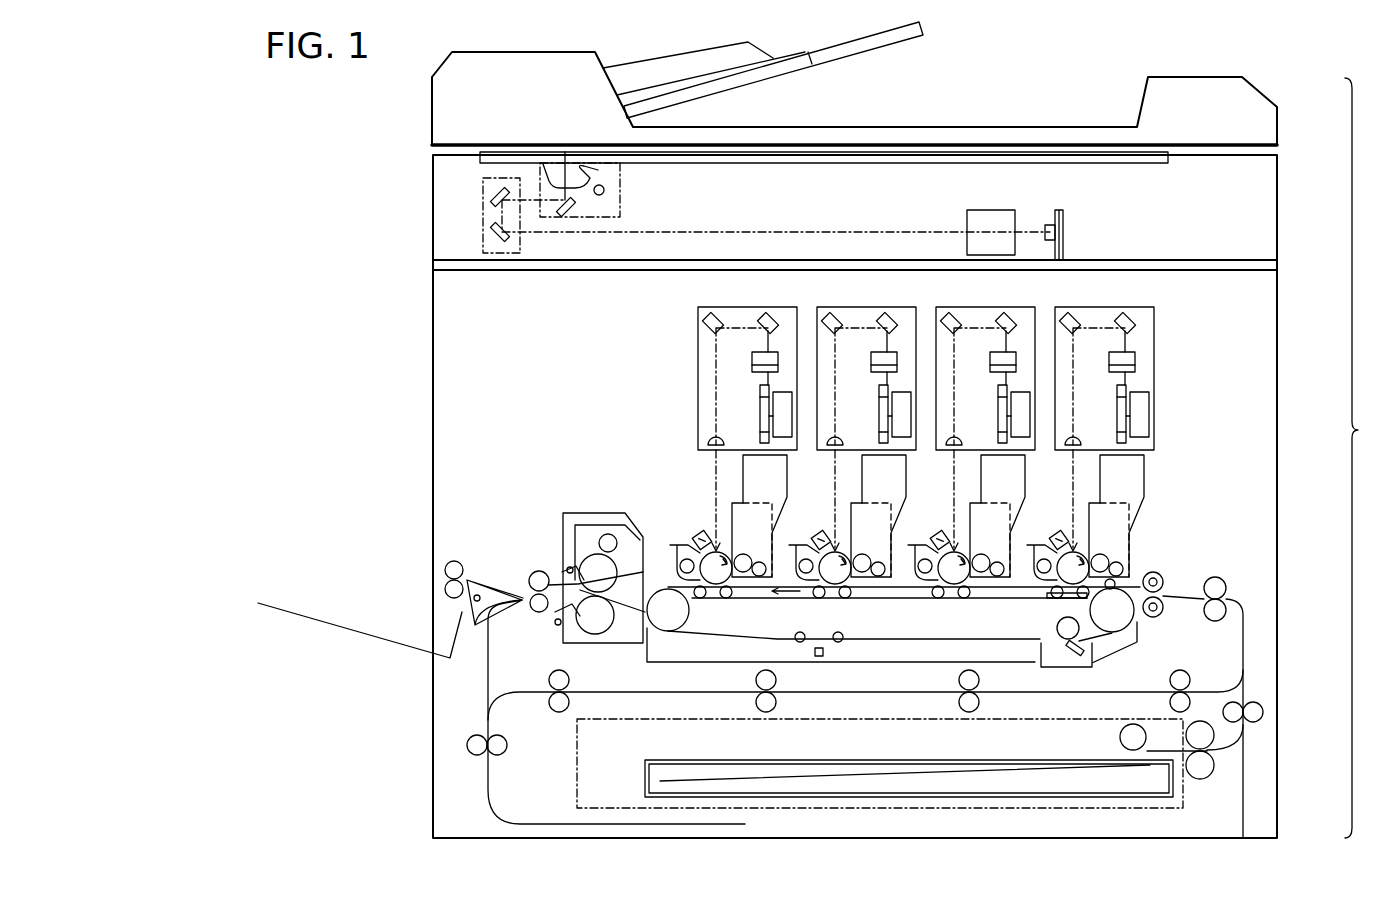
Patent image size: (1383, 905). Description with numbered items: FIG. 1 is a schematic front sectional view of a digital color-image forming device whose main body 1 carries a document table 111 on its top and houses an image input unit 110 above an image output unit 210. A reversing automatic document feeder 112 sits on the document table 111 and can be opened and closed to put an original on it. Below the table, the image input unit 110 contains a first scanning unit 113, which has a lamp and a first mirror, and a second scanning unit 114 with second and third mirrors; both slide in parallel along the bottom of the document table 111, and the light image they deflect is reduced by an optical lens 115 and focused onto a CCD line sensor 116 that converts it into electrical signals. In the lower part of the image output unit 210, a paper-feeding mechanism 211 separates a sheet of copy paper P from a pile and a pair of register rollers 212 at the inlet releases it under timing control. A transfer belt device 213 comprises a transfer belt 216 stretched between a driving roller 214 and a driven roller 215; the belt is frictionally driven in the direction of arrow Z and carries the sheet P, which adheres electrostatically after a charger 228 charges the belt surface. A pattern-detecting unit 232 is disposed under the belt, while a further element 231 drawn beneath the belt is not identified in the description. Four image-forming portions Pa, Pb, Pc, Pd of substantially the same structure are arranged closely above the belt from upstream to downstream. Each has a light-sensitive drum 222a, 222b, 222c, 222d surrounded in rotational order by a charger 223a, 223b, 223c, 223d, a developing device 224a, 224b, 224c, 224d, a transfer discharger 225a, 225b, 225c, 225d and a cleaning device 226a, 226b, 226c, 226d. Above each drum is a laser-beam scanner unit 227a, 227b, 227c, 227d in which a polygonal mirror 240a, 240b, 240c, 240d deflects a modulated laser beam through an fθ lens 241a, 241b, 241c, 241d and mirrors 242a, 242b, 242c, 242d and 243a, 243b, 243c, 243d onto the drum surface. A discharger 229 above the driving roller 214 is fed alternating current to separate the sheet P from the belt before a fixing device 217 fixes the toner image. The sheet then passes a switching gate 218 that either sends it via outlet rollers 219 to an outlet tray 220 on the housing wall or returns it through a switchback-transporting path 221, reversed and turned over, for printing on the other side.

The main body 1 is at (1360, 458).
The image input unit 110 is at (1247, 212).
The document table 111 is at (990, 152).
The reversing automatic document feeder 112 is at (1247, 122).
The first scanning unit 113 is at (622, 180).
The second scanning unit 114 is at (483, 197).
The optical lens 115 is at (990, 210).
The CCD line sensor 116 is at (1066, 214).
The image output unit 210 is at (1247, 472).
The paper-feeding mechanism 211 is at (1240, 791).
The register rollers 212 is at (1160, 572).
The transfer belt device 213 is at (897, 663).
The driving roller 214 is at (668, 632).
The driven roller 215 is at (1122, 640).
The transfer belt 216 is at (1013, 642).
The fixing device 217 is at (598, 513).
The switching gate 218 is at (504, 582).
The outlet rollers 219 is at (456, 561).
The outlet tray 220 is at (296, 612).
The switchback-transporting path 221 is at (490, 787).
The light-sensitive drum 222a is at (1112, 540).
The light-sensitive drum 222b is at (993, 540).
The light-sensitive drum 222c is at (873, 540).
The light-sensitive drum 222d is at (755, 540).
The charger 223a is at (1040, 520).
The charger 223b is at (921, 520).
The charger 223c is at (802, 520).
The charger 223d is at (699, 533).
The developing device 224a is at (1119, 516).
The developing device 224b is at (1001, 516).
The developing device 224c is at (881, 516).
The developing device 224d is at (766, 490).
The transfer discharger 225a is at (1049, 614).
The transfer discharger 225b is at (963, 611).
The transfer discharger 225c is at (839, 607).
The transfer discharger 225d is at (700, 598).
The cleaning device 226a is at (1026, 582).
The cleaning device 226b is at (918, 584).
The cleaning device 226c is at (792, 587).
The cleaning device 226d is at (676, 545).
The laser-beam scanner unit 227a is at (1131, 378).
The laser-beam scanner unit 227b is at (967, 344).
The laser-beam scanner unit 227c is at (858, 344).
The laser-beam scanner unit 227d is at (698, 390).
The charger 228 is at (1116, 581).
The discharger 229 is at (646, 632).
The belt tension rollers 231 is at (790, 640).
The pattern-detecting unit 232 is at (824, 652).
The polygonal mirror 240a is at (1112, 414).
The polygonal mirror 240b is at (993, 414).
The polygonal mirror 240c is at (874, 414).
The polygonal mirror 240d is at (760, 406).
The fθ lens 241a is at (1105, 364).
The fθ lens 241b is at (986, 364).
The fθ lens 241c is at (867, 364).
The fθ lens 241d is at (752, 366).
The mirror 242a is at (1131, 306).
The mirror 242b is at (1013, 306).
The mirror 242c is at (893, 306).
The mirror 242d is at (770, 314).
The mirror 243a is at (1064, 306).
The mirror 243b is at (946, 306).
The mirror 243c is at (826, 306).
The mirror 243d is at (712, 314).
The paper sheet P is at (1055, 762).
The image forming portion Pa is at (1059, 513).
The image forming portion Pb is at (940, 513).
The image forming portion Pc is at (821, 513).
The image forming portion Pd is at (708, 486).
The arrow Z is at (912, 636).